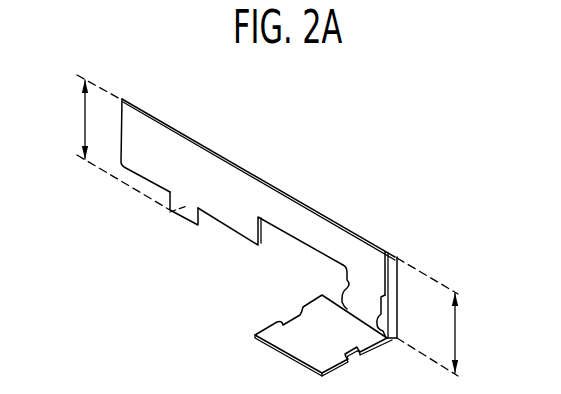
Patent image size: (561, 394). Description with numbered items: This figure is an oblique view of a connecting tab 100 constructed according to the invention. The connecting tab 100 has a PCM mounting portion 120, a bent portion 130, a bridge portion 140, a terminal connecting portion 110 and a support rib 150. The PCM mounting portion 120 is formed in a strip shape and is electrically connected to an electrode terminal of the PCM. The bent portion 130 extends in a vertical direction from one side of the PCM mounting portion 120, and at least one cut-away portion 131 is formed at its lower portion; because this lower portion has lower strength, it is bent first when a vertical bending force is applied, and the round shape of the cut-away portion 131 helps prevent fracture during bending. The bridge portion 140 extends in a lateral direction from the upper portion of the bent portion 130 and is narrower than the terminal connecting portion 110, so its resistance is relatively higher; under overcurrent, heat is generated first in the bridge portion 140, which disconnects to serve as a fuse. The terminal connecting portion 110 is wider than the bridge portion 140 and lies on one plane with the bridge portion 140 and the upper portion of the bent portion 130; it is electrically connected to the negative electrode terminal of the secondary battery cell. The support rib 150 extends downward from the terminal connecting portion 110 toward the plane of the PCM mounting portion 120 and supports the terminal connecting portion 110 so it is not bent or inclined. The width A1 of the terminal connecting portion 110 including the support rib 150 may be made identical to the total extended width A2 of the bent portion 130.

The connecting tab 100 is at (473, 132).
The terminal connecting portion 110 is at (208, 167).
The PCM mounting portion 120 is at (328, 338).
The bent portion 130 is at (398, 303).
The cut-away portion 131 is at (385, 296).
The bridge portion 140 is at (310, 228).
The support rib 150 is at (170, 212).
The width of terminal connecting portion including support rib A1 is at (70, 119).
The total extended width of bent portion A2 is at (467, 333).